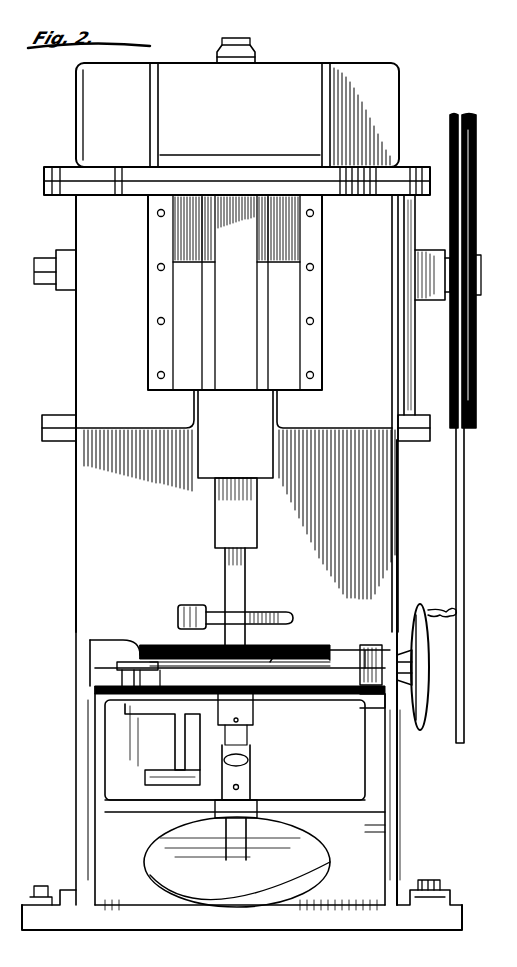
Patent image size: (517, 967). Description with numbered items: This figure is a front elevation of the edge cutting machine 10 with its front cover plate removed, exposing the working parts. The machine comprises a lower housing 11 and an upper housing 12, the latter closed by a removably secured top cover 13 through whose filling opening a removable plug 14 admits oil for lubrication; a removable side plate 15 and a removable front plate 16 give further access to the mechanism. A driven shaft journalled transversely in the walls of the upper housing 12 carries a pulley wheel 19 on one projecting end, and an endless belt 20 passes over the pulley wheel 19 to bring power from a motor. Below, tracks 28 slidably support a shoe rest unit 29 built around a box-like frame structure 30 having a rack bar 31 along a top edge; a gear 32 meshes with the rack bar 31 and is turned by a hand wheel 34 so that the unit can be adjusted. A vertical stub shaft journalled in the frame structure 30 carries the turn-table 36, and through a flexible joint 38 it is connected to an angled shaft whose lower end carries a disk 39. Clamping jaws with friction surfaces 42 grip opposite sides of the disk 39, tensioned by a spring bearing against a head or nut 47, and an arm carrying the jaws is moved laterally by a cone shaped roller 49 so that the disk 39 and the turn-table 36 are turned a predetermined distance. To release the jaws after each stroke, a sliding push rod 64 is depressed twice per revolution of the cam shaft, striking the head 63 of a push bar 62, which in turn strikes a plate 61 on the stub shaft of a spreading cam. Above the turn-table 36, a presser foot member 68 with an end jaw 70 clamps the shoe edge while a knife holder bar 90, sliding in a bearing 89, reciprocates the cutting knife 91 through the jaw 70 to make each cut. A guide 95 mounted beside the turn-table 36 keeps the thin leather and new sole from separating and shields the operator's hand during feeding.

The edge cutting machine 10 is at (481, 774).
The lower housing 11 is at (378, 562).
The upper housing 12 is at (98, 332).
The top cover 13 is at (375, 98).
The removable plug 14 is at (255, 52).
The removable side plate 15 is at (418, 352).
The removable front plate 16 is at (480, 275).
The pulley wheel 19 is at (470, 200).
The endless belt 20 is at (463, 502).
The tracks 28 is at (88, 698).
The shoe rest unit 29 is at (245, 756).
The box-like frame structure 30 is at (368, 832).
The rack bar 31 is at (365, 692).
The gear 32 is at (380, 640).
The hand wheel 34 is at (432, 710).
The turn-table 36 is at (165, 645).
The flexible joint 38 is at (247, 772).
The disk 39 is at (242, 888).
The friction surfaces 42 is at (222, 830).
The head or nut 47 is at (252, 730).
The cone shaped roller 49 is at (195, 738).
The plate 61 is at (148, 776).
The push bar 62 is at (122, 678).
The head 63 is at (118, 663).
The sliding push rod 64 is at (105, 638).
The presser foot member 68 is at (278, 610).
The jaw 70 is at (205, 607).
The bearing 89 is at (235, 434).
The knife holder bar 90 is at (232, 528).
The cutting knife 91 is at (232, 570).
The guide 95 is at (305, 655).